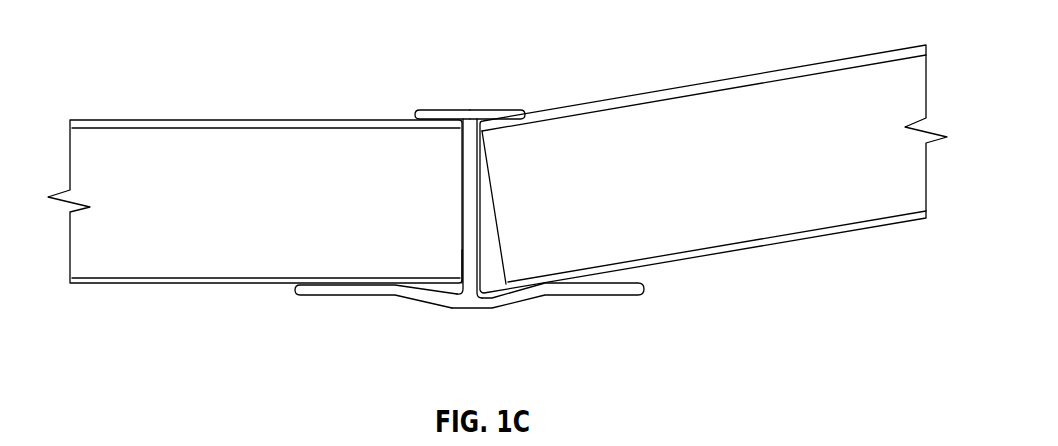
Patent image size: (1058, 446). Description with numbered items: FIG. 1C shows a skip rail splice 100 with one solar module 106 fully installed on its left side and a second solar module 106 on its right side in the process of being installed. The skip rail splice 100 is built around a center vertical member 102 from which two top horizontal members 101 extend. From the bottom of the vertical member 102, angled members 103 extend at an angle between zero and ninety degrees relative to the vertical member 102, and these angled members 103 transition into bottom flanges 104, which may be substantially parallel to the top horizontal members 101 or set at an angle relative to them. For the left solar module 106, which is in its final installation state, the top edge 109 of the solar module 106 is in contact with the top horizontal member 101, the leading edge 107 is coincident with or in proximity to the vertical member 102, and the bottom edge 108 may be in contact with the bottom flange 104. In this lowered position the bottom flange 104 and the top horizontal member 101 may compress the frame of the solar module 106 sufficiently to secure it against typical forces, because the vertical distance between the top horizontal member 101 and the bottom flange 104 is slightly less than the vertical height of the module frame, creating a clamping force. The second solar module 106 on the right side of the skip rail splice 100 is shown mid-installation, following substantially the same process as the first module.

The skip rail splice 100 is at (454, 109).
The horizontal member 101 is at (493, 114).
The vertical member 102 is at (475, 227).
The angled member 103 is at (432, 298).
The bottom flange 104 is at (355, 298).
The solar module 106 is at (132, 152).
The leading edge 107 is at (460, 270).
The bottom edge 108 is at (150, 293).
The top edge 109 is at (259, 117).